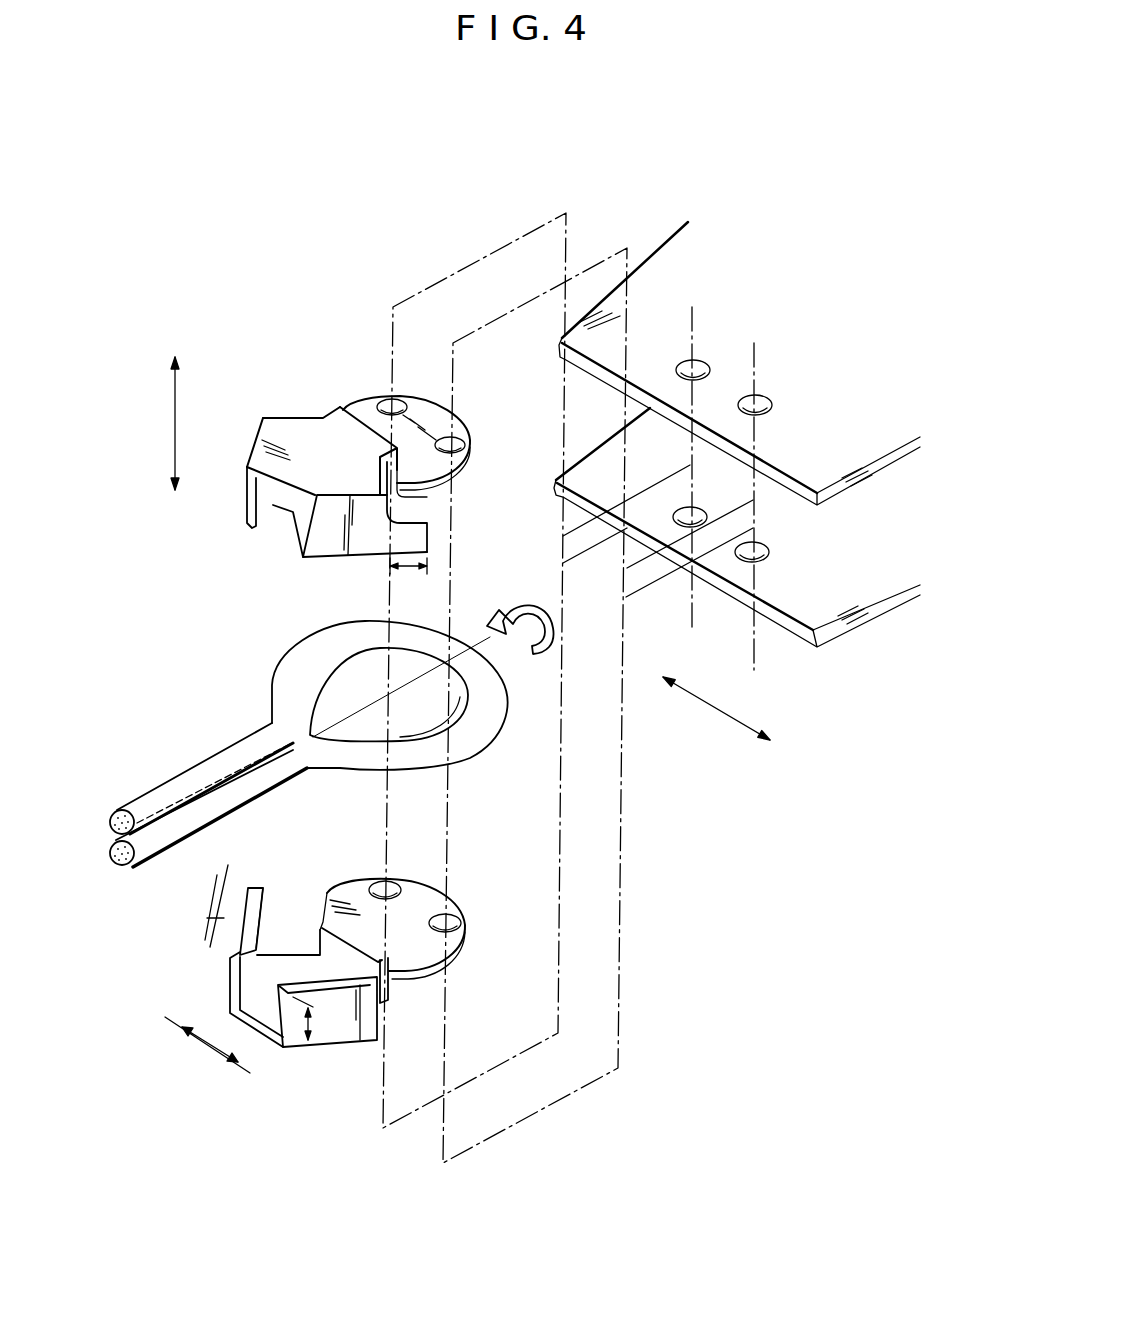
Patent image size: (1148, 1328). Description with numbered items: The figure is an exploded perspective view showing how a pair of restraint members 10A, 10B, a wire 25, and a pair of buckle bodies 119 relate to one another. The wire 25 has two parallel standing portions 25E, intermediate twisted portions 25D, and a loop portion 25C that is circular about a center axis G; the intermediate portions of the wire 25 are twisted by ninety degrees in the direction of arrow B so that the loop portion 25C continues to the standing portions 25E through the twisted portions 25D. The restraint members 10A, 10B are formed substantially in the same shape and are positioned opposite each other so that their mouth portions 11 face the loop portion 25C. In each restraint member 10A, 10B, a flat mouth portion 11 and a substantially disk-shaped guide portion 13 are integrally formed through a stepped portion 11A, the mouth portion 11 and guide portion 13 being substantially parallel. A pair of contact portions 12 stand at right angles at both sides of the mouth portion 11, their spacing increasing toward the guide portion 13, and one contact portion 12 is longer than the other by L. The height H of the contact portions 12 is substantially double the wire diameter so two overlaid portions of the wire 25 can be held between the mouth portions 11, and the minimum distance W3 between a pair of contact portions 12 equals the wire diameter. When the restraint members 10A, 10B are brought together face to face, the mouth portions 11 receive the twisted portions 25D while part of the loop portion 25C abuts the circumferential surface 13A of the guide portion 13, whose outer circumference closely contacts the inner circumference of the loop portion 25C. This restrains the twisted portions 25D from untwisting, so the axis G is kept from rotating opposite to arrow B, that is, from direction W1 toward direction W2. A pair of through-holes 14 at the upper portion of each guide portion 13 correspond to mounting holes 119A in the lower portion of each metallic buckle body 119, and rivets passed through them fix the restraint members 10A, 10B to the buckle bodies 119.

The restraint member 10A is at (288, 1070).
The restraint member 10B is at (263, 410).
The mouth portion 11 is at (288, 505).
The stepped portion 11A is at (395, 490).
The contact portion 12 is at (370, 543).
The guide portion 13 is at (463, 423).
The circumferential surface 13A is at (467, 473).
The through-hole 14 is at (383, 399).
The wire 25 is at (316, 765).
The loop portion 25C is at (473, 723).
The twisted portion 25D is at (273, 742).
The standing portion 25E is at (173, 830).
The buckle body 119 is at (860, 473).
The mounting hole 119A is at (745, 400).
The direction W1 is at (196, 423).
The direction W2 is at (698, 698).
The minimum distance W3 is at (200, 1050).
The length difference L is at (412, 575).
The height H is at (312, 1048).
The center axis G is at (388, 663).
The arrow B is at (533, 613).